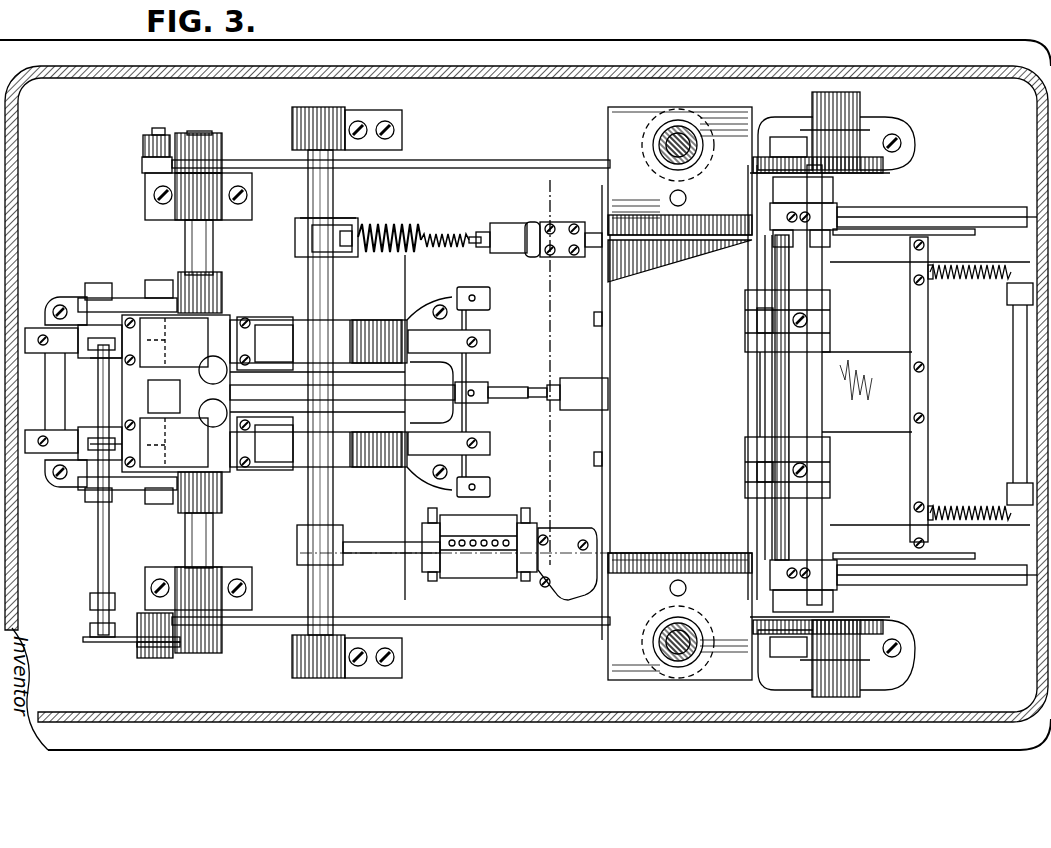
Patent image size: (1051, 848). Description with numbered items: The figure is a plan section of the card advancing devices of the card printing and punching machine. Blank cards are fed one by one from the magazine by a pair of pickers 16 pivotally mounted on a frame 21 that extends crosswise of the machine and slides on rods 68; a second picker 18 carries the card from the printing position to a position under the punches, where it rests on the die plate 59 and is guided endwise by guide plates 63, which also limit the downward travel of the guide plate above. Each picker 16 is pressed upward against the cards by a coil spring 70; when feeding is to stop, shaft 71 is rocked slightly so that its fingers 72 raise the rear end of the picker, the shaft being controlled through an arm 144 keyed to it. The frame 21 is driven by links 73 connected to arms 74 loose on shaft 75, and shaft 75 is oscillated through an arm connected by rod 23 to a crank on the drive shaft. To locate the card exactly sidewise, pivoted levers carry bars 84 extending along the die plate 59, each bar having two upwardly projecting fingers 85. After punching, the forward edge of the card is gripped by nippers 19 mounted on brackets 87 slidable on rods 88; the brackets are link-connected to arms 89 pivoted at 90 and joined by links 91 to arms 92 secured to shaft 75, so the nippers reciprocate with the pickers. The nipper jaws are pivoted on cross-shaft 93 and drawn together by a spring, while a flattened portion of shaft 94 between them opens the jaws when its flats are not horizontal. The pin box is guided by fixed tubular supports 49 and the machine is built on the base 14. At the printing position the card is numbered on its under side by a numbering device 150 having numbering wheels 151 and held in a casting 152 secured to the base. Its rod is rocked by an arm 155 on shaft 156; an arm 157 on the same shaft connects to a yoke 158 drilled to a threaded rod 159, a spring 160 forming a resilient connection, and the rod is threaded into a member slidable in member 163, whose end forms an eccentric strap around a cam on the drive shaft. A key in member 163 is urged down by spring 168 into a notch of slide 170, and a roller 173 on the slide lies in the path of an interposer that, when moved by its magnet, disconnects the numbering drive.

The main frame block 14 is at (640, 434).
The picker 16 is at (175, 440).
The picker 18 is at (366, 330).
The nippers 19 is at (746, 298).
The frame 21 is at (212, 388).
The connecting rod 23 is at (338, 393).
The fixed tubular supports 49 is at (682, 140).
The die plate 59 is at (612, 648).
The guide plates 63 is at (612, 222).
The rods 68 is at (35, 330).
The coil spring 70 is at (168, 338).
The shaft 71 is at (100, 548).
The fingers 72 is at (112, 352).
The links 73 is at (122, 298).
The arms 74 is at (195, 303).
The shaft 75 is at (208, 250).
The bars 84 is at (610, 358).
The fingers 85 is at (598, 322).
The brackets 87 is at (832, 212).
The rods 88 is at (958, 210).
The arms 89 is at (870, 145).
The pivot 90 is at (842, 95).
The links 91 is at (455, 163).
The arms 92 is at (168, 145).
The cross-shaft 93 is at (822, 375).
The shaft 94 is at (760, 370).
The arm 144 is at (125, 642).
The numbering device 150 is at (492, 572).
The numbering wheels 151 is at (470, 540).
The casting 152 is at (585, 535).
The arm 155 is at (368, 542).
The shaft 156 is at (318, 196).
The arm 157 is at (312, 238).
The yoke 158 is at (354, 225).
The threaded rod 159 is at (437, 236).
The spring 160 is at (382, 254).
The member 163 is at (598, 252).
The spring 168 is at (540, 225).
The slide 170 is at (508, 236).
The roller 173 is at (483, 232).